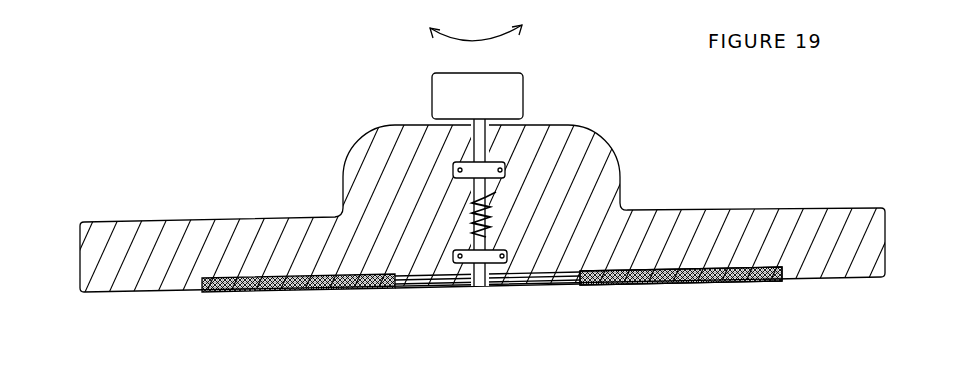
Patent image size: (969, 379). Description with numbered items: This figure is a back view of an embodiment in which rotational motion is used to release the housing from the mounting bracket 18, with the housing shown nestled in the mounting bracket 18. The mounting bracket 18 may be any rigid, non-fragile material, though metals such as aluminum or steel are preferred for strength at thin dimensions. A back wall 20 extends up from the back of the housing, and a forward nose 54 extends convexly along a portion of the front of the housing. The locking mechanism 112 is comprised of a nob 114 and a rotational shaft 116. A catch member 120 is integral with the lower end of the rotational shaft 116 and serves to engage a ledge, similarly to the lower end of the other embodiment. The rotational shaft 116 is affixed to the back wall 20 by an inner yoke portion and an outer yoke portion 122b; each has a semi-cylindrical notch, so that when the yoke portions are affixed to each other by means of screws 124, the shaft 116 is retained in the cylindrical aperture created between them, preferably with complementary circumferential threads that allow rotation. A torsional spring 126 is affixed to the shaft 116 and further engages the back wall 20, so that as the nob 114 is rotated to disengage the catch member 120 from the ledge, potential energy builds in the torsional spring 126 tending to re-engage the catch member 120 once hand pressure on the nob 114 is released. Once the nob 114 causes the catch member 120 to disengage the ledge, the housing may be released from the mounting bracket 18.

The back wall 20 is at (603, 147).
The forward nose 54 is at (685, 284).
The mounting bracket 18 is at (783, 284).
The catch member 120 is at (476, 283).
The rotational shaft 116 is at (477, 147).
The outer yoke portion 122b is at (457, 172).
The screws 124 is at (456, 257).
The torsional spring 126 is at (490, 203).
The nob 114 is at (512, 96).
The locking mechanism 112 is at (442, 78).